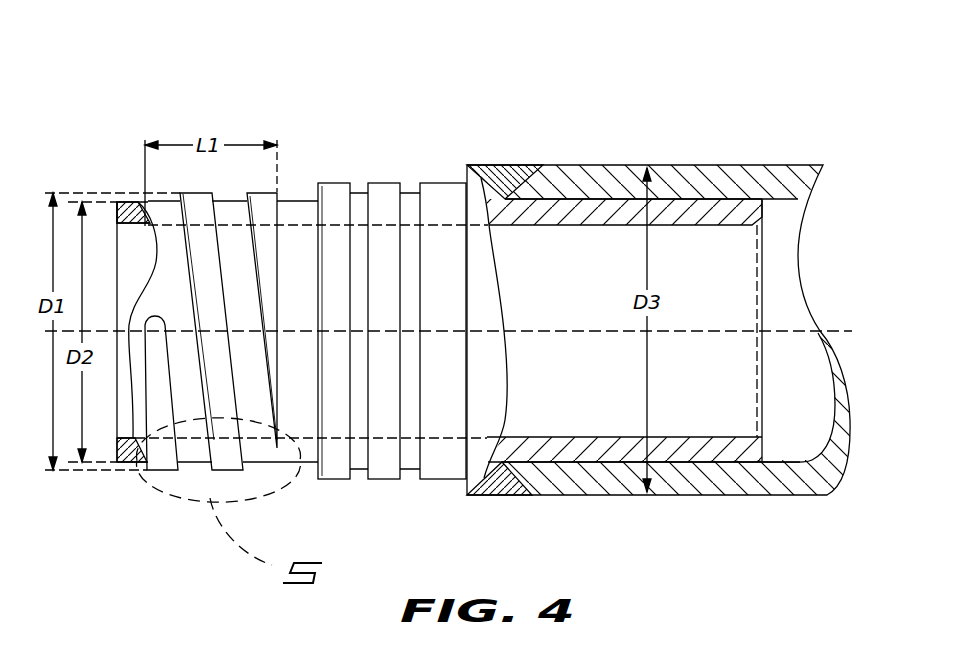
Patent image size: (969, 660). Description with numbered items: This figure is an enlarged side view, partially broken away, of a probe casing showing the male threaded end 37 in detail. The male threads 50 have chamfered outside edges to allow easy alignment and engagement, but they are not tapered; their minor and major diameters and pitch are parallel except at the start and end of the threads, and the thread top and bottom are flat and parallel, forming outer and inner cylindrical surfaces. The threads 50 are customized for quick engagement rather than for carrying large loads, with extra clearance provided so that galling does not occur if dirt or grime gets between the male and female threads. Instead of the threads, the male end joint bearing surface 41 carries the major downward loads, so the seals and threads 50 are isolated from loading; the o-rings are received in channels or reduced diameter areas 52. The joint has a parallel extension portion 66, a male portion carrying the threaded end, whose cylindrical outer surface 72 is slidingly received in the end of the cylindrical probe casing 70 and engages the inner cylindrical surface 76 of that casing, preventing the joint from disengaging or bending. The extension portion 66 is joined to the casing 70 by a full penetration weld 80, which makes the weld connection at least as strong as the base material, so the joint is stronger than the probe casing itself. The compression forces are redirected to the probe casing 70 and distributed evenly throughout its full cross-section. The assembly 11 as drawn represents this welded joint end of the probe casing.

The fitting 11 is at (693, 151).
The male threaded end 37 is at (188, 129).
The male end joint bearing surface 41 is at (118, 213).
The male thread 50 is at (192, 199).
The reduced diameter area 52 is at (378, 481).
The parallel extension portion 66 is at (571, 212).
The probe casing 70 is at (677, 498).
The cylindrical outer surface 72 is at (612, 199).
The inner cylindrical surface 76 is at (791, 456).
The full penetration weld 80 is at (501, 172).